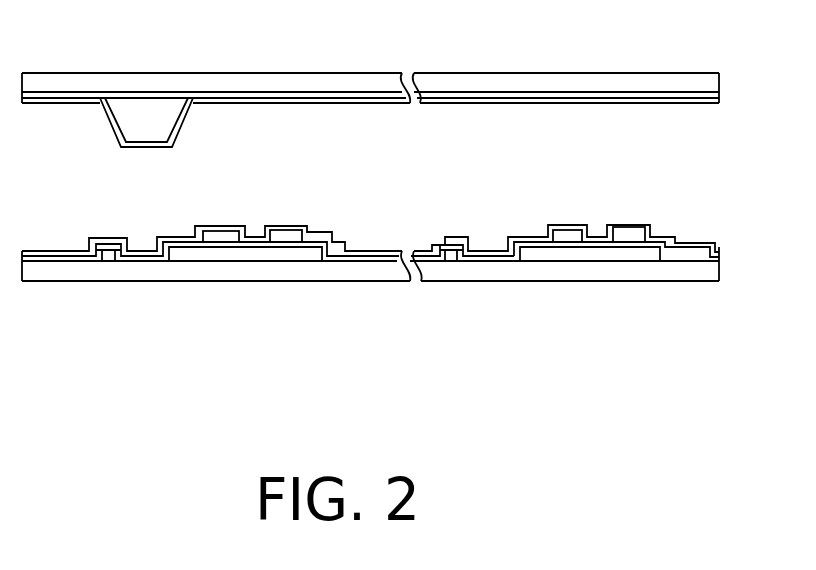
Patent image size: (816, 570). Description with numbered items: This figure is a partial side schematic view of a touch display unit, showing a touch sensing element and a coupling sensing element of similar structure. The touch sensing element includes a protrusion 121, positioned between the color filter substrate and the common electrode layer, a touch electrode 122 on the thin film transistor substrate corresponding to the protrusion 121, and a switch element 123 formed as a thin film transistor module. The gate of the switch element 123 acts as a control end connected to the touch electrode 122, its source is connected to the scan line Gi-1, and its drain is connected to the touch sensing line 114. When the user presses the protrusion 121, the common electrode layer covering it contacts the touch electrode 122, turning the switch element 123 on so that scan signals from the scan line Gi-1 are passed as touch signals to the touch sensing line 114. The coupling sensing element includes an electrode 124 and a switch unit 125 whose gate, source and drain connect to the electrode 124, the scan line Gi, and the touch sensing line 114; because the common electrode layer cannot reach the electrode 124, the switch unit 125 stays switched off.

The touch sensing line 114 is at (336, 248).
The protrusion 121 is at (148, 108).
The touch electrode 122 is at (102, 240).
The switch element 123 is at (334, 229).
The electrode 124 is at (453, 240).
The switch unit 125 is at (684, 229).
The scan line Gi-1 is at (284, 230).
The scan line Gi is at (627, 234).